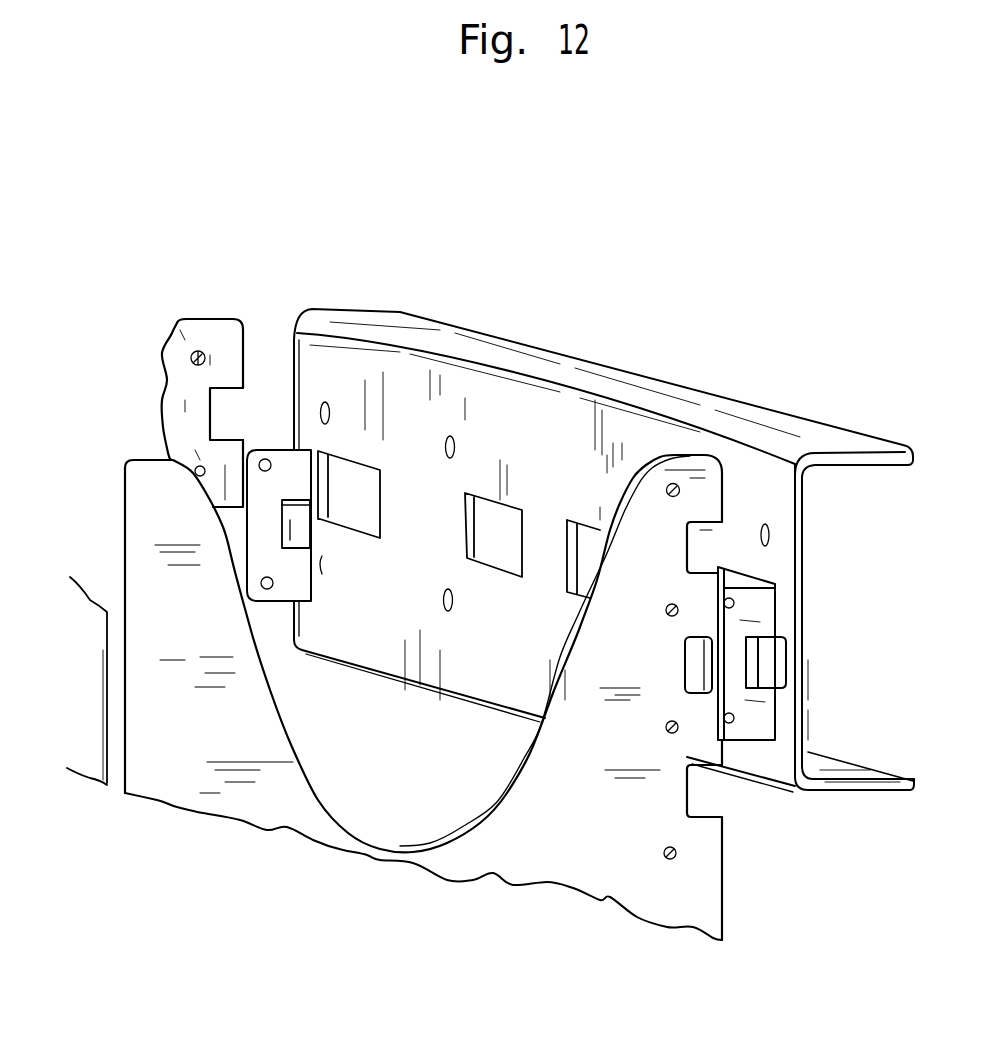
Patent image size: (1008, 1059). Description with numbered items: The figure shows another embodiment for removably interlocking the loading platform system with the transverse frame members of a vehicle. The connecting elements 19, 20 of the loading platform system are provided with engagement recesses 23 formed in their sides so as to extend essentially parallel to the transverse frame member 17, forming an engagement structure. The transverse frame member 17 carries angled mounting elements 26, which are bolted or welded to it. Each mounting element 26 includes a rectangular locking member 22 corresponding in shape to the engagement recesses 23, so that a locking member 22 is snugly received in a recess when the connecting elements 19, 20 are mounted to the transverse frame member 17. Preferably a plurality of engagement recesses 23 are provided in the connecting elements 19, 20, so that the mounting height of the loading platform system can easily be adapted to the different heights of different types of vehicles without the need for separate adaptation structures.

The transverse frame member 17 is at (833, 765).
The connecting element 19 is at (202, 345).
The connecting element 20 is at (700, 885).
The locking member 22 is at (775, 652).
The engagement recess 23 is at (227, 417).
The mounting element 26 is at (293, 468).